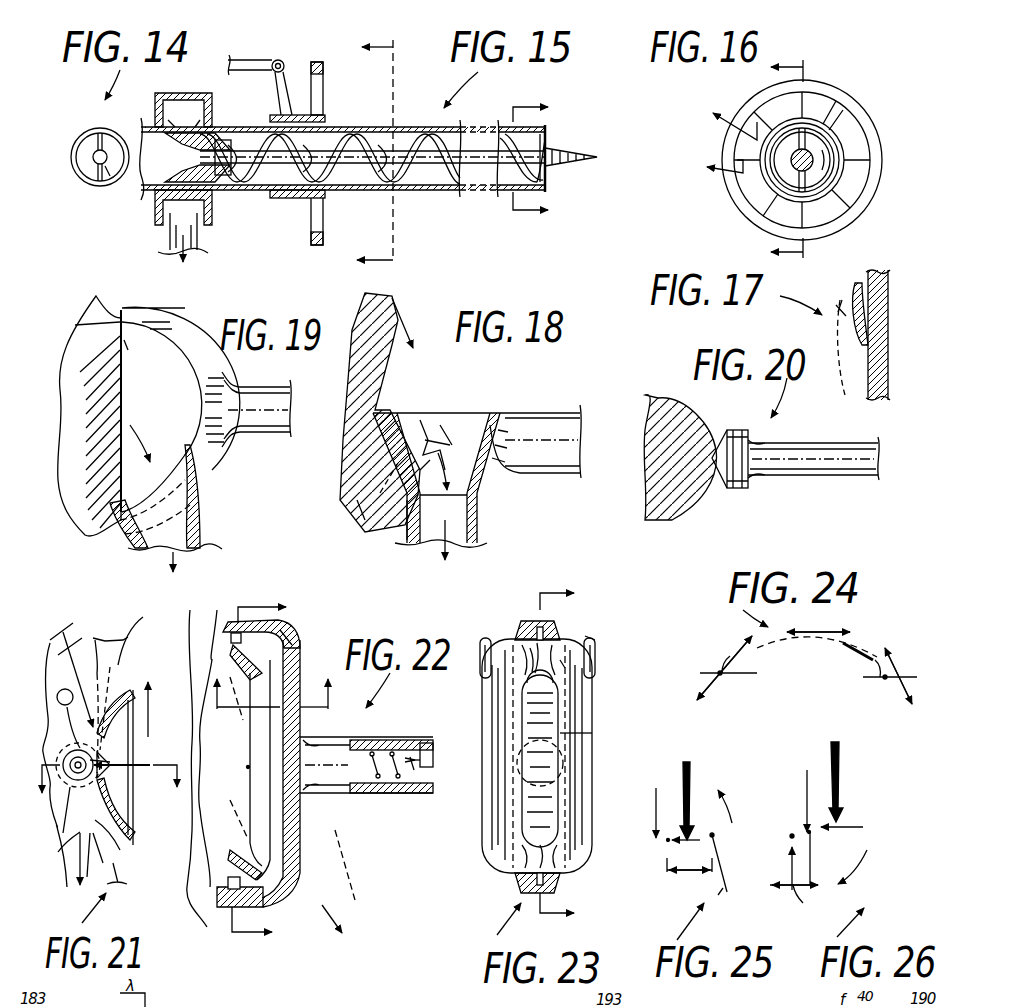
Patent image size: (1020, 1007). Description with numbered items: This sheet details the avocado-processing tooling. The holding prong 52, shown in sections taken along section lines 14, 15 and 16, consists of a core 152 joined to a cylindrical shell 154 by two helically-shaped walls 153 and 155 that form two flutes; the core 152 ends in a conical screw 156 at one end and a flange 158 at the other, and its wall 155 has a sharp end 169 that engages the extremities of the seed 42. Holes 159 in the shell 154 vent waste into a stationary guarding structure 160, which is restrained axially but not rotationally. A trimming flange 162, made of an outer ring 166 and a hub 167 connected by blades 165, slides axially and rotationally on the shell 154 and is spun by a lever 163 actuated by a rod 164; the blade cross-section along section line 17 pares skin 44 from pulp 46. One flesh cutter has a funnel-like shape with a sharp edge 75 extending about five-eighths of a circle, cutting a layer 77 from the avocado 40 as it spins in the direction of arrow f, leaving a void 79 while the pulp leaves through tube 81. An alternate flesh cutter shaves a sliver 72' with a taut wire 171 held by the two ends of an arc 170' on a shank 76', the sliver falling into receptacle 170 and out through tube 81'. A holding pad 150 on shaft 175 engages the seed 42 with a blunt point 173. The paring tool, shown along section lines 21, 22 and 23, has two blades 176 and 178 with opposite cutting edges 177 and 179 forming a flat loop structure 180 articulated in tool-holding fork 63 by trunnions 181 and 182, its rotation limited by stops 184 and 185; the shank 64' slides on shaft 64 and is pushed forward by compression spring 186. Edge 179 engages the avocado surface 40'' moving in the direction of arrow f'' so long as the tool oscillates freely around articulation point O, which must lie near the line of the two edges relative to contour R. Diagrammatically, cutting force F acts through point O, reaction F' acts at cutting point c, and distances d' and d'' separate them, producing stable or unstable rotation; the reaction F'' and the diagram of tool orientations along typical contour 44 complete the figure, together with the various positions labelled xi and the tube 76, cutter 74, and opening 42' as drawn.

In FIG. 15, the section line 14— 14 is at (547, 160).
In FIG. 16, the section line 15— 15 is at (803, 158).
In FIG. 15, the section line 16— 16 is at (391, 154).
In FIG. 16, the section line 17— 17 is at (715, 135).
In FIG. 22, the section line 21— 21 is at (268, 683).
In FIG. 21, the section line 22— 22 is at (110, 794).
In FIG. 23, the section line 22— 22 is at (571, 761).
In FIG. 22, the section line 23— 23 is at (275, 772).
In FIG. 19, the avocado 40 is at (89, 416).
In FIG. 18, the avocado 40 is at (420, 338).
In FIG. 21, the avocado surface 40'' is at (85, 740).
In FIG. 20, the seed 42 is at (686, 453).
In FIG. 17, the wall opening 42' is at (838, 351).
In FIG. 24, the skin 44 is at (758, 634).
In FIG. 17, the pulp 46 is at (887, 334).
In FIG. 18, the pulp 46 is at (363, 378).
In FIG. 15, the prong 52 is at (478, 123).
In FIG. 22, the tool-holding fork 63 is at (291, 826).
In FIG. 22, the shaft 64 is at (420, 733).
In FIG. 22, the shank 64' is at (391, 786).
In FIG. 23, the shank 64' is at (602, 737).
In FIG. 19, the flow path 72' is at (152, 430).
In FIG. 18, the funnel 74 is at (481, 404).
In FIG. 18, the sharp edge 75 is at (420, 413).
In FIG. 18, the tube 76 is at (535, 423).
In FIG. 19, the shank 76' is at (248, 429).
In FIG. 18, the layer of pulp 77 is at (397, 493).
In FIG. 18, the void 79 is at (357, 500).
In FIG. 18, the tube 81 is at (469, 522).
In FIG. 19, the tube 81' is at (195, 552).
In FIG. 20, the holding pad 150 is at (748, 494).
In FIG. 14, the core 152 is at (93, 163).
In FIG. 15, the core 152 is at (402, 190).
In FIG. 16, the core 152 is at (797, 154).
In FIG. 14, the helically-shaped wall 153 is at (97, 140).
In FIG. 15, the helically-shaped wall 153 is at (343, 137).
In FIG. 16, the helically-shaped wall 153 is at (788, 181).
In FIG. 14, the cylindrical shell 154 is at (105, 134).
In FIG. 15, the cylindrical shell 154 is at (496, 196).
In FIG. 16, the cylindrical shell 154 is at (820, 153).
In FIG. 14, the helically-shaped wall 155 is at (112, 172).
In FIG. 15, the helically-shaped wall 155 is at (251, 174).
In FIG. 16, the helically-shaped wall 155 is at (808, 147).
In FIG. 15, the conical screw 156 is at (571, 165).
In FIG. 15, the flange 158 is at (218, 126).
In FIG. 15, the hole 159 is at (187, 187).
In FIG. 15, the stationary guarding structure 160 is at (184, 93).
In FIG. 16, the stationary guarding structure 160 is at (872, 212).
In FIG. 15, the trimming flange 162 is at (318, 60).
In FIG. 15, the lever 163 is at (288, 76).
In FIG. 15, the rod 164 is at (246, 60).
In FIG. 16, the blade 165 is at (814, 105).
In FIG. 17, the blade 165 is at (873, 296).
In FIG. 15, the outer ring 166 is at (317, 240).
In FIG. 16, the outer ring 166 is at (851, 229).
In FIG. 15, the hub 167 is at (282, 200).
In FIG. 16, the hub 167 is at (774, 120).
In FIG. 15, the sharp end 169 is at (553, 136).
In FIG. 19, the receptacle 170 is at (181, 496).
In FIG. 19, the arc 170' is at (181, 378).
In FIG. 19, the wire 171 is at (124, 345).
In FIG. 20, the blunt point 173 is at (718, 481).
In FIG. 20, the shaft 175 is at (832, 474).
In FIG. 21, the blade 176 is at (121, 680).
In FIG. 23, the blade 176 is at (500, 713).
In FIG. 21, the cutting edge 177 is at (122, 856).
In FIG. 23, the cutting edge 177 is at (580, 724).
In FIG. 21, the blade 178 is at (117, 743).
In FIG. 23, the blade 178 is at (530, 808).
In FIG. 21, the cutting edge 179 is at (100, 787).
In FIG. 23, the cutting edge 179 is at (548, 713).
In FIG. 23, the flat loop structure 180 is at (561, 664).
In FIG. 22, the trunnion 181 is at (226, 628).
In FIG. 23, the trunnion 181 is at (537, 627).
In FIG. 22, the trunnion 182 is at (251, 893).
In FIG. 23, the trunnion 182 is at (527, 890).
In FIG. 22, the stop 184 is at (298, 643).
In FIG. 23, the stop 184 is at (591, 636).
In FIG. 23, the stop 185 is at (486, 641).
In FIG. 22, the compression spring 186 is at (401, 788).
In FIG. 21, the contour R is at (108, 680).
In FIG. 22, the cutting point c is at (249, 766).
In FIG. 25, the cutting point c is at (718, 845).
In FIG. 26, the cutting point c is at (791, 834).
In FIG. 25, the cutting force F is at (641, 794).
In FIG. 26, the cutting force F is at (789, 785).
In FIG. 25, the reaction F' is at (708, 893).
In FIG. 26, the force F'' is at (820, 912).
In FIG. 25, the arrow f is at (693, 801).
In FIG. 26, the arrow f is at (845, 782).
In FIG. 21, the arrow f'' is at (67, 858).
In FIG. 25, the articulation point O is at (664, 839).
In FIG. 26, the articulation point O is at (814, 836).
In FIG. 25, the distance d' is at (689, 860).
In FIG. 26, the distance d'' is at (783, 867).
In FIG. 24, the coordinates xi is at (860, 647).